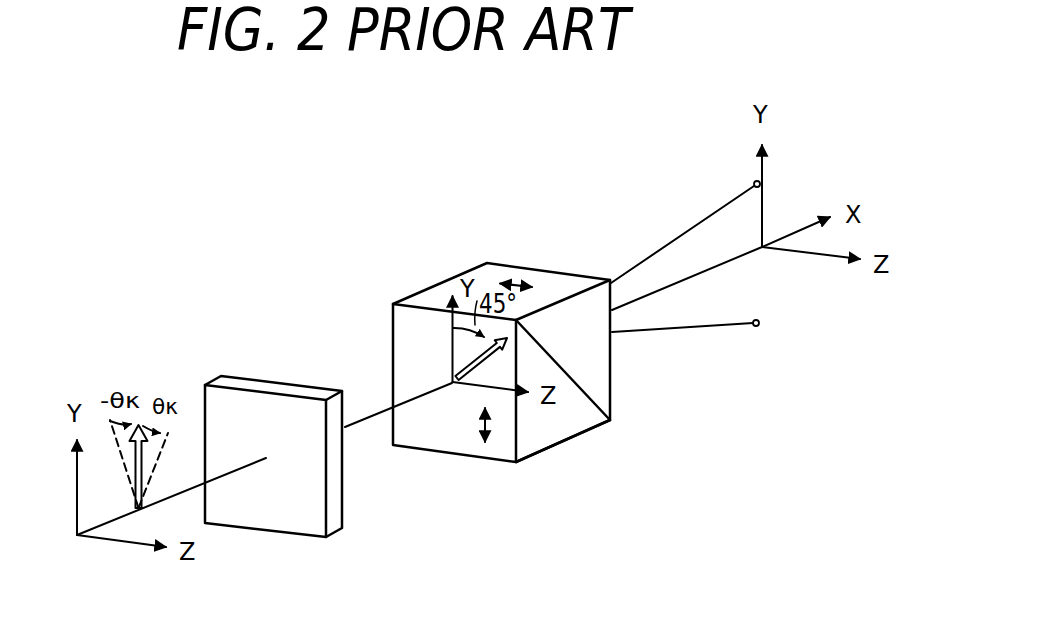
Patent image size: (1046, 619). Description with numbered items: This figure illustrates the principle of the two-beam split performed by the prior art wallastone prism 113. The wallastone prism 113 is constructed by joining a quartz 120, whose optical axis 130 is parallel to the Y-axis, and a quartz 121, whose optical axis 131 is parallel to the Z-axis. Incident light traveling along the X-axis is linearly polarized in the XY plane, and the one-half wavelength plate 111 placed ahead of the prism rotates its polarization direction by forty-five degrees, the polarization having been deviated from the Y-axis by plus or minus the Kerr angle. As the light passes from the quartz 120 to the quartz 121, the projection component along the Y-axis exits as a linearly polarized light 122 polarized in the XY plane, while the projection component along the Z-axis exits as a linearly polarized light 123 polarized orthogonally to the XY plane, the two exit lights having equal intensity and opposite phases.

The one-half wavelength plate 111 is at (337, 535).
The wallastone prism 113 is at (679, 401).
The quartz 120 is at (592, 432).
The quartz 121 is at (613, 398).
The linearly polarized light 122 is at (693, 227).
The linearly polarized light 123 is at (720, 330).
The optical axis 130 is at (482, 428).
The optical axis 131 is at (515, 284).